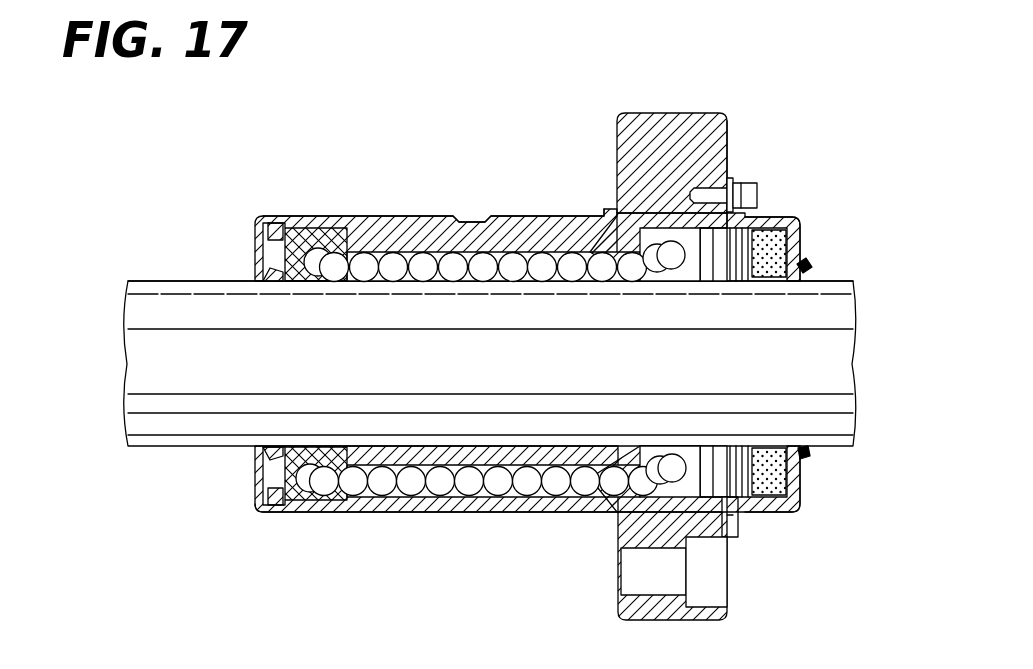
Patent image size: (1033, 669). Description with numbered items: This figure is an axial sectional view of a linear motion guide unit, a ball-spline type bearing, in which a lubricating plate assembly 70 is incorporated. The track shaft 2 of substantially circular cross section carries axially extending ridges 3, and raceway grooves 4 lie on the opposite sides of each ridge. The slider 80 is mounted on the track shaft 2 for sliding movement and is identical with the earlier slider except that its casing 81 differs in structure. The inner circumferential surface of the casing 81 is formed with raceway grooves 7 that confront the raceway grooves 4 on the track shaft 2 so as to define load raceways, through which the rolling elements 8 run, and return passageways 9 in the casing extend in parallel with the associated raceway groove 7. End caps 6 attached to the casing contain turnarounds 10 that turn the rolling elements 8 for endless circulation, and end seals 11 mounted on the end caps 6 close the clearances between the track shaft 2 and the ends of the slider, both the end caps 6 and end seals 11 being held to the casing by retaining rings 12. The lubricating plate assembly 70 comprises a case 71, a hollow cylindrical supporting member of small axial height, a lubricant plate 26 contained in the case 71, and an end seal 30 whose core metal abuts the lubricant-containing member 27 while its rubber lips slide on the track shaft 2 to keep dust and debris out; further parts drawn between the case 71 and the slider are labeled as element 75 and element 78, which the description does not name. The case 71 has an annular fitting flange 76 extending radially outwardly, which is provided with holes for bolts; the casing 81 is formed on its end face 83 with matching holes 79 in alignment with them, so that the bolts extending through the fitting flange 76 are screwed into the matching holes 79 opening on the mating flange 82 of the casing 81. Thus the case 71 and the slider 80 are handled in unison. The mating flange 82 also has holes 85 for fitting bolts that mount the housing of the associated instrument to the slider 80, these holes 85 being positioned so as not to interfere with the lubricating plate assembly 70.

The track shaft 2 is at (158, 362).
The ridges 3 is at (172, 283).
The raceway grooves 4 is at (152, 318).
The end caps 6 is at (298, 240).
The raceway grooves 7 is at (440, 232).
The rolling elements 8 is at (488, 262).
The return passageways 9 is at (520, 512).
The turnarounds 10 is at (318, 232).
The end seals 11 is at (270, 275).
The retaining rings 12 is at (275, 222).
The lubricant plate 26 is at (770, 270).
The lubricant-containing member 27 is at (770, 455).
The end seal 30 is at (810, 266).
The lubricating plate assembly 70 is at (801, 214).
The case 71 is at (790, 218).
The spacer rings 75 is at (736, 283).
The fitting flange 76 is at (743, 186).
The bolt shank 78 is at (712, 190).
The matching holes 79 is at (700, 190).
The slider 80 is at (461, 212).
The casing 81 is at (540, 240).
The mating flange 82 is at (672, 152).
The end face 83 is at (730, 137).
The holes 85 is at (636, 578).